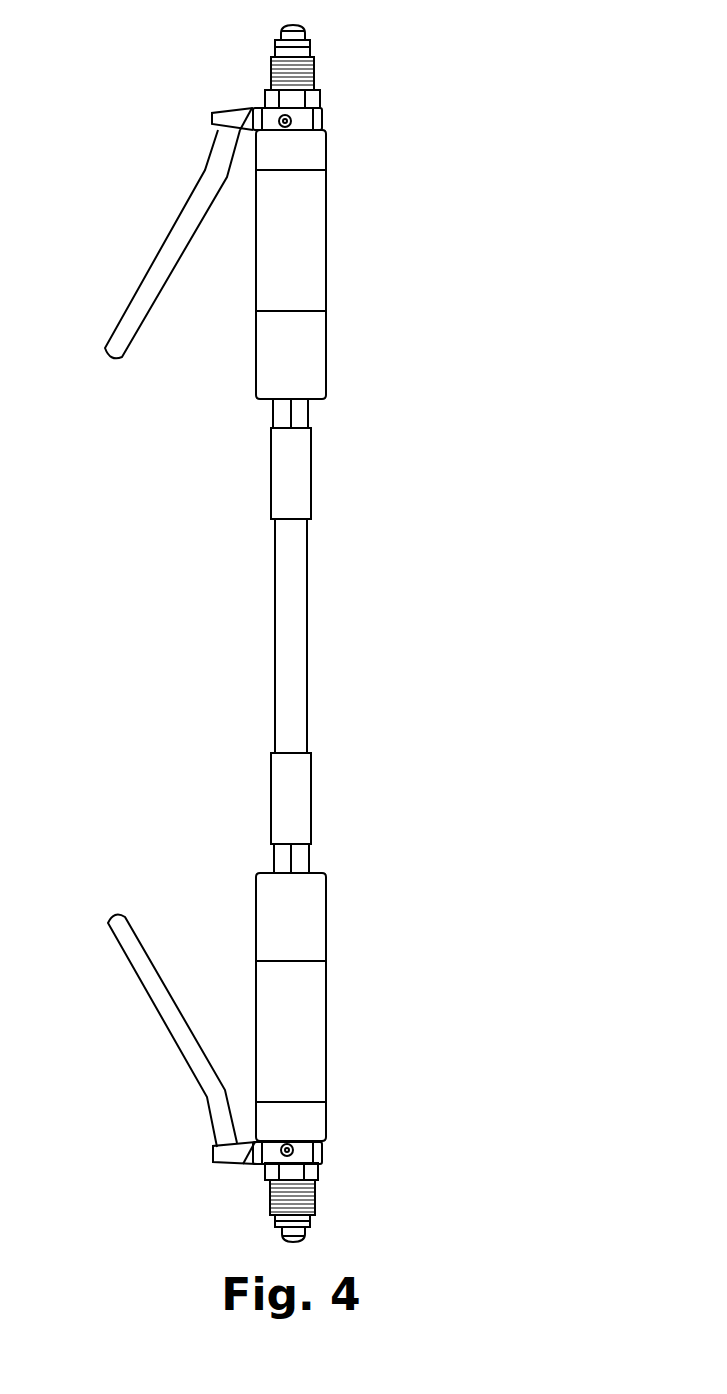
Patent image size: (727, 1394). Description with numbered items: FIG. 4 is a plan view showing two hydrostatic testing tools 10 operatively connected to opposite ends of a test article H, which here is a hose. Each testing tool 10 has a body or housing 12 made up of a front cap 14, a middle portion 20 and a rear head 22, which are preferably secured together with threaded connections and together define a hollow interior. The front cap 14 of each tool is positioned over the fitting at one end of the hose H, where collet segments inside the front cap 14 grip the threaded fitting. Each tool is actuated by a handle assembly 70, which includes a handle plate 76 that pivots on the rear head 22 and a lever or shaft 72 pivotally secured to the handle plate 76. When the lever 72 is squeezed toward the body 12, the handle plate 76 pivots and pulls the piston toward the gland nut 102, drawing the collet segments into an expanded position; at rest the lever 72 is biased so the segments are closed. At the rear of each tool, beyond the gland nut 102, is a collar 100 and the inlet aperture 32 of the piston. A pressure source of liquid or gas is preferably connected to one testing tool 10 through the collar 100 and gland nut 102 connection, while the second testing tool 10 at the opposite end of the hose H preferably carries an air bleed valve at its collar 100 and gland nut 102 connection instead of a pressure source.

The hydrostatic testing tool 10 is at (305, 626).
The body or housing 12 is at (330, 252).
The front cap 14 is at (327, 357).
The middle portion 20 is at (327, 287).
The rear head 22 is at (327, 155).
The inlet aperture 32 is at (297, 27).
The handle assembly 70 is at (154, 636).
The lever or shaft 72 is at (153, 308).
The handle plate 76 is at (323, 118).
The collar 100 is at (268, 72).
The gland nut 102 is at (266, 100).
The test article H is at (307, 660).